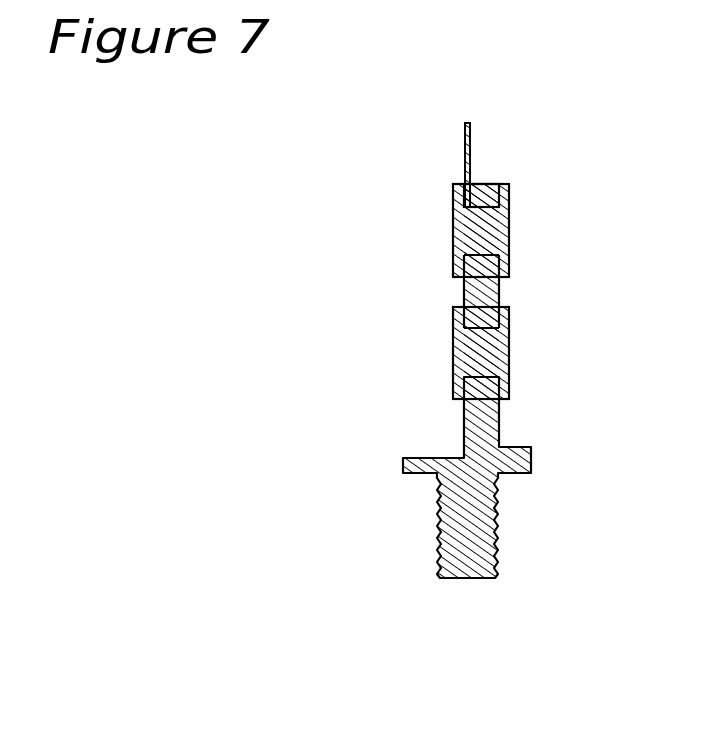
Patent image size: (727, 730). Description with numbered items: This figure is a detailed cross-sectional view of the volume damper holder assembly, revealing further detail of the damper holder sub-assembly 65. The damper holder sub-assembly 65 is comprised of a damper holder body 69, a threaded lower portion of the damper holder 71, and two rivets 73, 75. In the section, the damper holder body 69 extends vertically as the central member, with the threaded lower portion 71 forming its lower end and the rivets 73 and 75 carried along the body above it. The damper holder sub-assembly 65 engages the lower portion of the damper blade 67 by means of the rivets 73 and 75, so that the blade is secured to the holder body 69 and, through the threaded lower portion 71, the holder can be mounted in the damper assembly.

The damper holder sub-assembly 65 is at (488, 350).
The lower portion of the damper blade 67 is at (463, 137).
The damper holder body 69 is at (485, 407).
The threaded lower portion of damper holder 71 is at (500, 558).
The rivet 73 is at (507, 355).
The rivet 75 is at (510, 228).